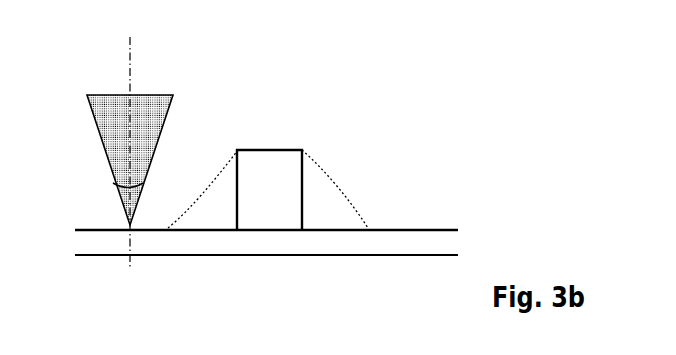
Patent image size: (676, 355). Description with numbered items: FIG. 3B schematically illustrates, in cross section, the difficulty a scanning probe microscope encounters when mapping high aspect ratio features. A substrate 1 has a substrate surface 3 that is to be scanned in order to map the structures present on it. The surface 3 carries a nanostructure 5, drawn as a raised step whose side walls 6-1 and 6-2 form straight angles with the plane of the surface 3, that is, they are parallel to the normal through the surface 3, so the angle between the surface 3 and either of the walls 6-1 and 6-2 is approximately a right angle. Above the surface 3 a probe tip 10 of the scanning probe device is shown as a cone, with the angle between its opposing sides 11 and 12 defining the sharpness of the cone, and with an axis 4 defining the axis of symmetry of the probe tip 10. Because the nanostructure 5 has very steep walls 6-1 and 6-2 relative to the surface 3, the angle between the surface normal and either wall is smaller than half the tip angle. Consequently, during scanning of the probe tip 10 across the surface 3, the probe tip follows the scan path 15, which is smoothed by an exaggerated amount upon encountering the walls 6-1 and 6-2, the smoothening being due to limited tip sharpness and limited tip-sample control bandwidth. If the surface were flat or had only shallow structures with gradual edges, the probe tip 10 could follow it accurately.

The substrate 1 is at (177, 245).
The substrate surface 3 is at (348, 226).
The axis 4 is at (128, 74).
The nanostructure 5 is at (302, 149).
The side wall 6-1 is at (237, 177).
The side wall 6-2 is at (305, 198).
The probe tip 10 is at (148, 110).
The side of the probe tip 11 is at (110, 158).
The side of the probe tip 12 is at (167, 117).
The scan path 15 is at (317, 158).